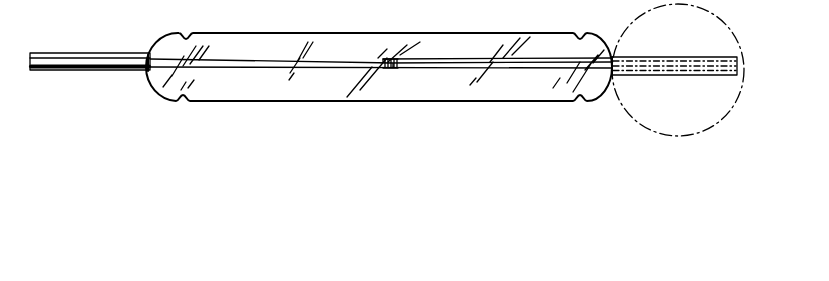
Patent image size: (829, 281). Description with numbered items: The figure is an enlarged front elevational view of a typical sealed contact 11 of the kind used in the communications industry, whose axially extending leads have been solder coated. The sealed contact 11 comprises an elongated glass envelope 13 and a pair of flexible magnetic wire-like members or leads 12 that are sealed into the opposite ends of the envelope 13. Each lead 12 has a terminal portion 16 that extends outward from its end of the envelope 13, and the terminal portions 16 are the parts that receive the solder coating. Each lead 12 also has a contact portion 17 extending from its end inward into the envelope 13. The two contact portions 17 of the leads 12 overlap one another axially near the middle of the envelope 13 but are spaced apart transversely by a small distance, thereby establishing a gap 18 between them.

The sealed contact 11 is at (331, 30).
The lead 12 is at (142, 50).
The glass envelope 13 is at (483, 33).
The terminal portion 16 is at (57, 54).
The contact portion 17 is at (442, 59).
The gap 18 is at (394, 66).